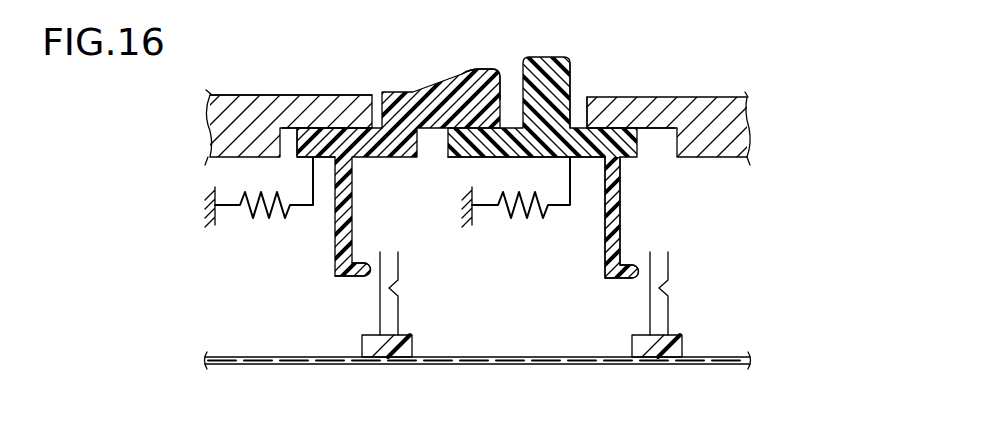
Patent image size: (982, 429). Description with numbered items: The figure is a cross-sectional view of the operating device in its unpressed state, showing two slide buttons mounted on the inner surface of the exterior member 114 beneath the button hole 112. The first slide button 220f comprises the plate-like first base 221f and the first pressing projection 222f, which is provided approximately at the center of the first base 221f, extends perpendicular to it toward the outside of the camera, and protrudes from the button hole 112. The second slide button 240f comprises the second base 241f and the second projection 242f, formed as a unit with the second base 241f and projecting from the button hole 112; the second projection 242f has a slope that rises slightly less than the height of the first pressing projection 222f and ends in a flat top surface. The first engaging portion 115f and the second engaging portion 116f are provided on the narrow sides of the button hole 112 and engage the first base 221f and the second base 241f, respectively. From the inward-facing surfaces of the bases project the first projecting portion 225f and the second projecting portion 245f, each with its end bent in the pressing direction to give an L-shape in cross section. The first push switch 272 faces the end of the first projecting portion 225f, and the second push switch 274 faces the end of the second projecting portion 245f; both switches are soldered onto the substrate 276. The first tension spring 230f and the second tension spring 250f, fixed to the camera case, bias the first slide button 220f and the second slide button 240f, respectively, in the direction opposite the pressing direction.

The exterior member 114 is at (273, 143).
The second engaging portion 116f is at (270, 108).
The first engaging portion 115f is at (667, 130).
The button hole 112 is at (578, 96).
The second slide button 240f is at (405, 82).
The second base 241f is at (312, 130).
The second projection 242f is at (481, 78).
The second projecting portion 245f is at (335, 267).
The first slide button 220f is at (573, 55).
The first base 221f is at (482, 152).
The first pressing projection 222f is at (572, 62).
The first projecting portion 225f is at (620, 218).
The second tension spring 250f is at (242, 215).
The first tension spring 230f is at (512, 218).
The second push switch 274 is at (362, 341).
The first push switch 272 is at (632, 341).
The substrate 276 is at (500, 357).